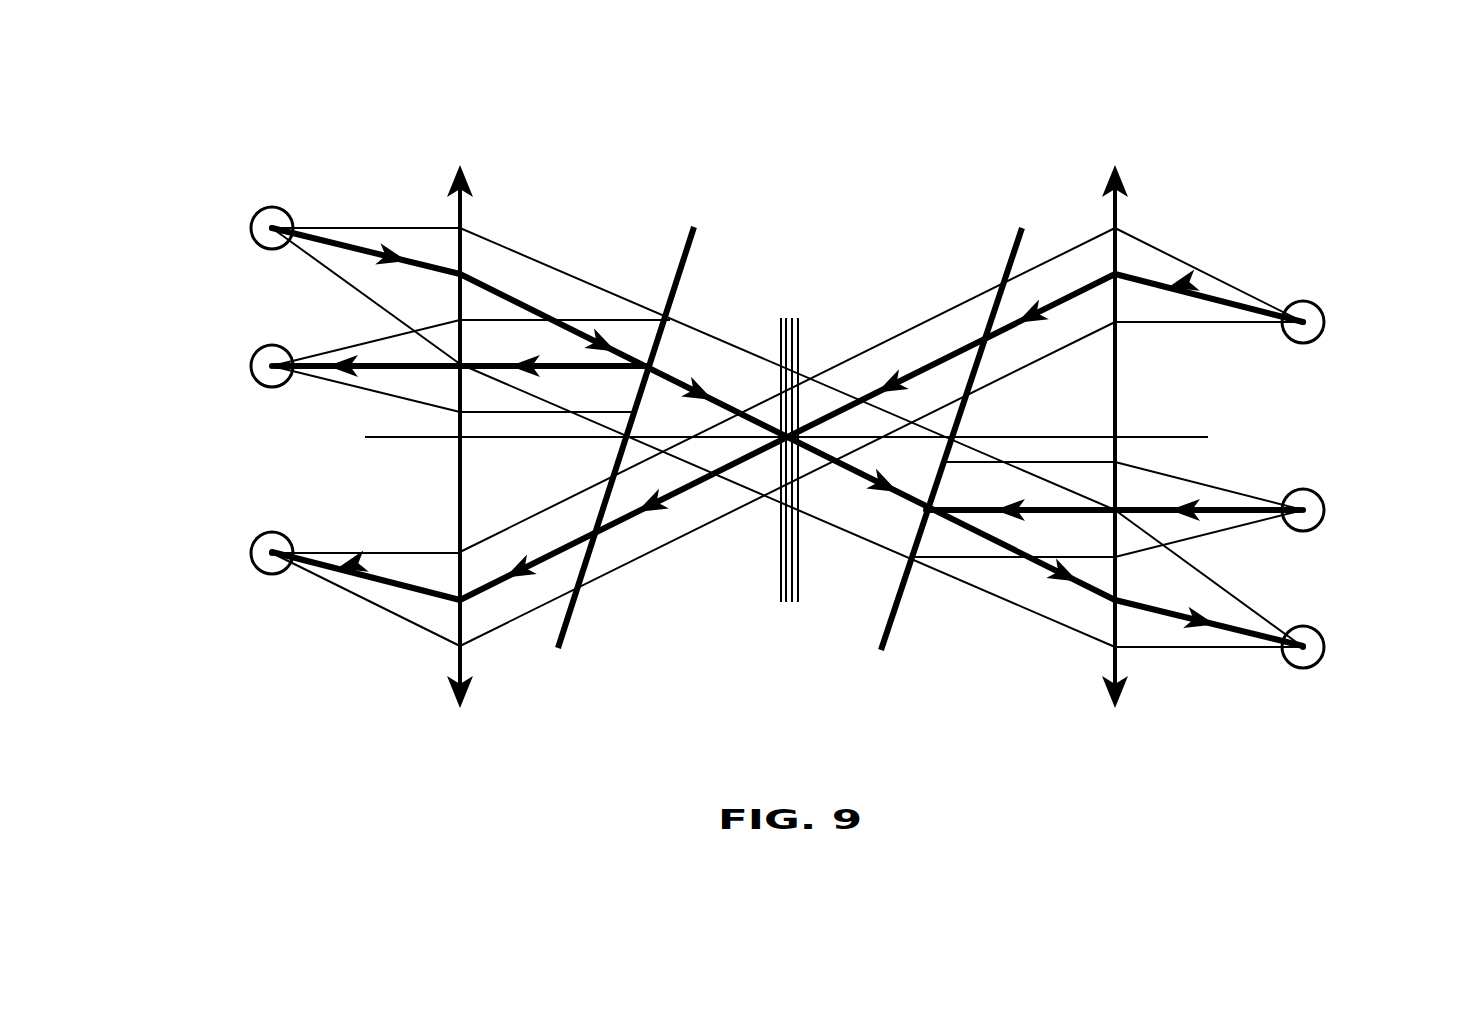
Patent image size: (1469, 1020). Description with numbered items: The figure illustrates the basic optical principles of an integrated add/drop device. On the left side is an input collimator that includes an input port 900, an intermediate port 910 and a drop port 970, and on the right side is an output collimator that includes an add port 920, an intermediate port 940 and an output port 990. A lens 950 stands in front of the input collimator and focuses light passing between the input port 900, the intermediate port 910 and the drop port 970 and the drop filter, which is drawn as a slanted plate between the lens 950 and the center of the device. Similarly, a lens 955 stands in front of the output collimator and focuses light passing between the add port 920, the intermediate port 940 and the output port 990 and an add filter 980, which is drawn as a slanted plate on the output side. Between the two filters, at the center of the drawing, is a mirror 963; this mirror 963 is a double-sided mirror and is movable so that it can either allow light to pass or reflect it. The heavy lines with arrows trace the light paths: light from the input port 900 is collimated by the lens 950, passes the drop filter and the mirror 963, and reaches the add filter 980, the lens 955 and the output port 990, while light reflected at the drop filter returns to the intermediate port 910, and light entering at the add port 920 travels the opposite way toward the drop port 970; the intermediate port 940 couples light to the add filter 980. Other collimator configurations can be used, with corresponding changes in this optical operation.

The input port 900 is at (326, 249).
The intermediate port 910 is at (427, 418).
The add port 920 is at (1252, 285).
The intermediate port 940 is at (1169, 490).
The lens 950 is at (455, 396).
The lens 955 is at (1111, 397).
The mirror 963 is at (785, 426).
The drop port 970 is at (317, 597).
The add filter 980 is at (959, 421).
The output port 990 is at (1276, 628).